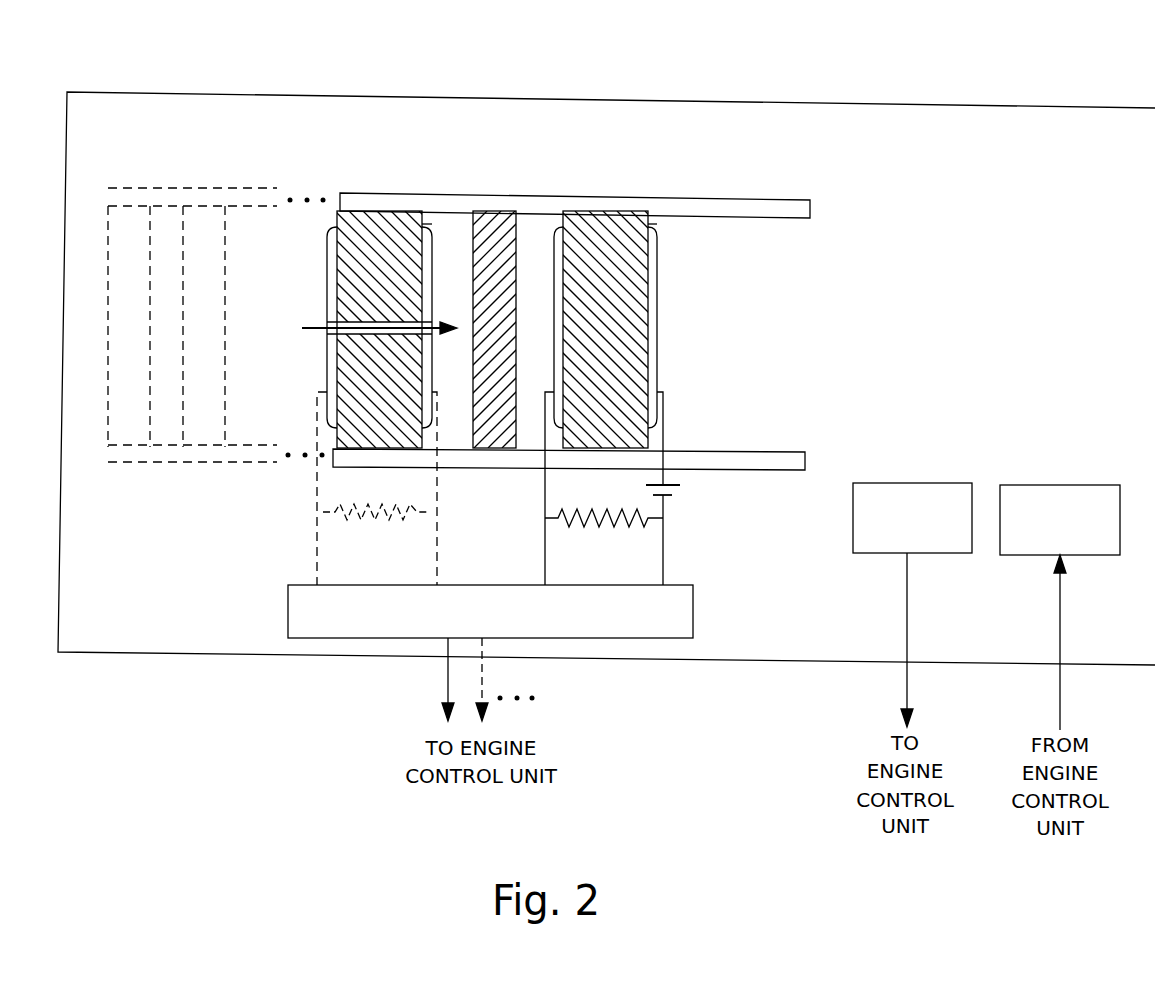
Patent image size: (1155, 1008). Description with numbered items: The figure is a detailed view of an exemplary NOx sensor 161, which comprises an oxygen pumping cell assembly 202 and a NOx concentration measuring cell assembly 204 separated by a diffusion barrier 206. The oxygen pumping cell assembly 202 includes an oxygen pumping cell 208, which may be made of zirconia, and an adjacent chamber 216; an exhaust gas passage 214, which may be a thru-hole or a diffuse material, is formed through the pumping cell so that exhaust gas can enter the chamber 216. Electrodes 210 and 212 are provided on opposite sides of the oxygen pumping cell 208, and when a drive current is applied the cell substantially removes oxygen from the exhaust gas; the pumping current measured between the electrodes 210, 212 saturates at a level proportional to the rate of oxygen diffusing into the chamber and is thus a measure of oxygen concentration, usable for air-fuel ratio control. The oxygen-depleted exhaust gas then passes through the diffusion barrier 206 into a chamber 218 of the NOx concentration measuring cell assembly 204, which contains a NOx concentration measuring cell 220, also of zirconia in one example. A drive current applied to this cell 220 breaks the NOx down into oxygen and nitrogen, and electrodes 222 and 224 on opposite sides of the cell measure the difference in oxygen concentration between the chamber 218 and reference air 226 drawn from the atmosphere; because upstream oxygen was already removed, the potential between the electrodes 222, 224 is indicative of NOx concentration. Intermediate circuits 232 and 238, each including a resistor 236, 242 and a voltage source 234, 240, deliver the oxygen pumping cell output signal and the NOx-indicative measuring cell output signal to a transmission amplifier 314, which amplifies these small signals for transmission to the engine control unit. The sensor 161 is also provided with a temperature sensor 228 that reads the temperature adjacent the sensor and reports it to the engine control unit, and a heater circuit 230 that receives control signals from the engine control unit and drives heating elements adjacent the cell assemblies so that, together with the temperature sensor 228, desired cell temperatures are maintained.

The NOx sensor 161 is at (995, 70).
The oxygen pumping cell assembly 202 is at (418, 146).
The NOx concentration measuring cell assembly 204 is at (598, 148).
The diffusion barrier 206 is at (518, 230).
The oxygen pumping cell 208 is at (427, 223).
The electrode 210 is at (328, 262).
The electrode 212 is at (432, 268).
The exhaust gas passage 214 is at (327, 329).
The chamber 216 is at (452, 230).
The chamber 218 is at (548, 230).
The NOx concentration measuring cell 220 is at (648, 223).
The electrode 222 is at (553, 270).
The electrode 224 is at (657, 270).
The reference air 226 is at (766, 316).
The temperature sensor 228 is at (168, 176).
The heater circuit 230 is at (1055, 487).
The intermediate circuit 232 is at (296, 515).
The voltage source 234 is at (432, 482).
The resistor 236 is at (372, 530).
The intermediate circuit 238 is at (530, 527).
The voltage source 240 is at (652, 486).
The resistor 242 is at (603, 522).
The transmission amplifier 314 is at (617, 638).